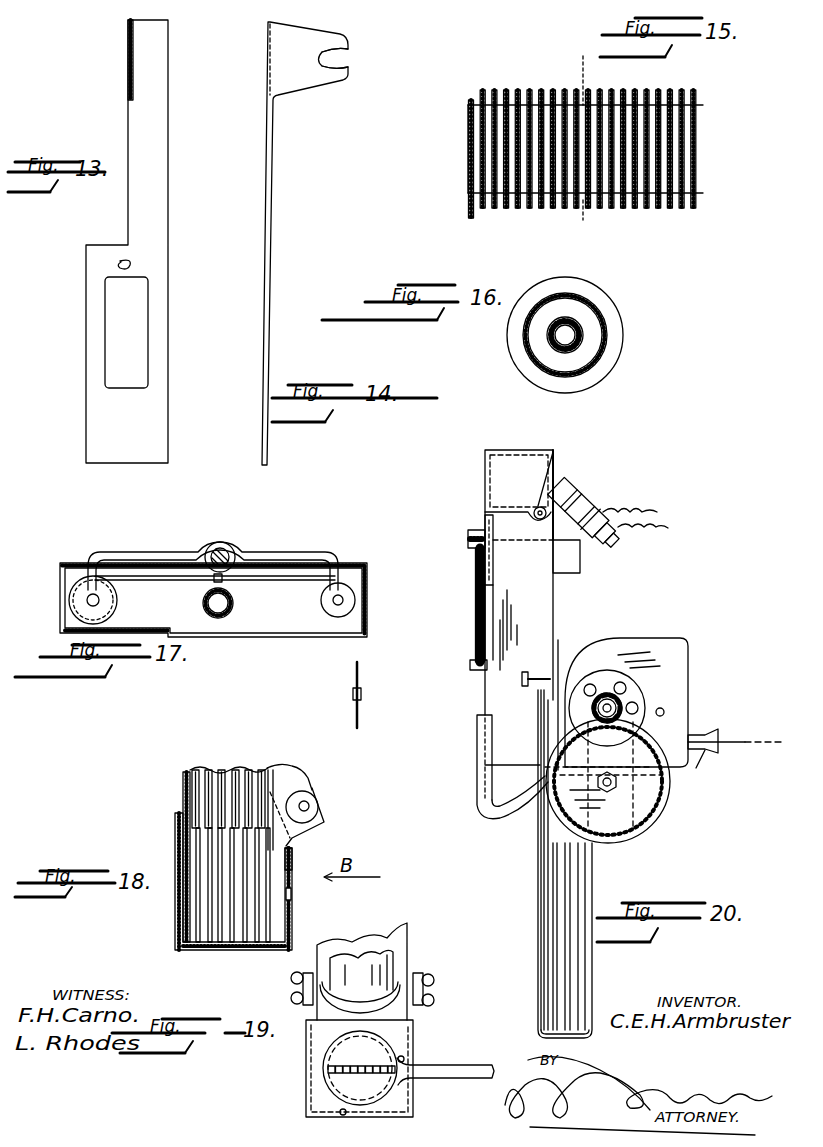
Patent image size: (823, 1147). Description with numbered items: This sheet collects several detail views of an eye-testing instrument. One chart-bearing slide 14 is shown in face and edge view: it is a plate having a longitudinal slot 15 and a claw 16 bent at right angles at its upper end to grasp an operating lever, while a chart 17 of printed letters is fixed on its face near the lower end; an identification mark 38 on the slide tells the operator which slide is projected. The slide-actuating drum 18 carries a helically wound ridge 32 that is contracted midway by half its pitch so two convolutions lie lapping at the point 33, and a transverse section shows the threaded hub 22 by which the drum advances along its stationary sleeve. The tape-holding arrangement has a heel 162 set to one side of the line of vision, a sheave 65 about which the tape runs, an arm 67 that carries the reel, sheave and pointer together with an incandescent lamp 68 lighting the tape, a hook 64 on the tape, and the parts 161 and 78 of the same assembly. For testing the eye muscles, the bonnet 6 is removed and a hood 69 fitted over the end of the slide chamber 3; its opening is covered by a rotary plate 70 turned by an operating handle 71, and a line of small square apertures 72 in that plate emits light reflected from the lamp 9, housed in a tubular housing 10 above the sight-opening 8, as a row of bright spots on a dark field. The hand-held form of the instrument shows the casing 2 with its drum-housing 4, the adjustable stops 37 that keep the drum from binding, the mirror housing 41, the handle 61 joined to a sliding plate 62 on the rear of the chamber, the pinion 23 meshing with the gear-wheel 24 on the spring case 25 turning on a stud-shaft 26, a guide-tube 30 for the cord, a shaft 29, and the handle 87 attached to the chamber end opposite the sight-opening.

In FIG. 18, the casing 2 is at (190, 770).
In FIG. 20, the casing 2 is at (556, 600).
In FIG. 18, the slide chamber 3 is at (183, 790).
In FIG. 19, the slide chamber 3 is at (408, 946).
In FIG. 20, the slide chamber 3 is at (475, 622).
In FIG. 20, the drum-housing 4 is at (690, 650).
In FIG. 20, the bonnet 6 is at (535, 465).
In FIG. 18, the sight-opening 8 is at (292, 860).
In FIG. 20, the sight-opening 8 is at (556, 478).
In FIG. 18, the incandescent lamp 9 is at (313, 806).
In FIG. 18, the tubular housing 10 is at (323, 822).
In FIG. 20, the tubular housing 10 is at (596, 512).
In FIG. 13, the slide 14 is at (169, 172).
In FIG. 14, the slide 14 is at (273, 165).
In FIG. 18, the slide 14 is at (228, 768).
In FIG. 13, the longitudinal slot 15 is at (135, 298).
In FIG. 13, the claw 16 is at (127, 92).
In FIG. 14, the claw 16 is at (300, 95).
In FIG. 15, the claw 16 is at (585, 137).
In FIG. 13, the chart 17 is at (158, 433).
In FIG. 15, the drum 18 is at (614, 137).
In FIG. 16, the drum 18 is at (600, 306).
In FIG. 16, the hub 22 is at (580, 332).
In FIG. 20, the pinion 23 is at (620, 700).
In FIG. 20, the gear-wheel 24 is at (672, 792).
In FIG. 20, the spring case 25 is at (660, 823).
In FIG. 20, the stud-shaft 26 is at (622, 816).
In FIG. 20, the shaft 29 is at (748, 738).
In FIG. 20, the guide-tube 30 is at (705, 730).
In FIG. 15, the helically wound ridge 32 is at (490, 88).
In FIG. 16, the helically wound ridge 32 is at (620, 376).
In FIG. 15, the lapping convolutions 33 is at (600, 135).
In FIG. 16, the lapping convolutions 33 is at (606, 340).
In FIG. 20, the adjustable stop 37 is at (477, 592).
In FIG. 13, the identification mark 38 is at (133, 264).
In FIG. 20, the mirror housing 41 is at (580, 570).
In FIG. 20, the handle 61 is at (477, 795).
In FIG. 20, the plate 62 is at (477, 773).
In FIG. 17, the hook 64 is at (362, 708).
In FIG. 17, the sheave 65 is at (362, 595).
In FIG. 17, the arm 67 is at (133, 552).
In FIG. 17, the incandescent lamp 68 is at (233, 604).
In FIG. 18, the hood 69 is at (175, 828).
In FIG. 19, the hood 69 is at (308, 1108).
In FIG. 18, the rotary plate 70 is at (292, 920).
In FIG. 19, the rotary plate 70 is at (372, 1050).
In FIG. 19, the operating handle 71 is at (468, 1064).
In FIG. 18, the square apertures 72 is at (292, 897).
In FIG. 19, the square apertures 72 is at (340, 1072).
In FIG. 17, the knob 78 is at (233, 545).
In FIG. 20, the handle 87 is at (593, 878).
In FIG. 17, the bar 161 is at (180, 582).
In FIG. 17, the heel 162 is at (110, 612).